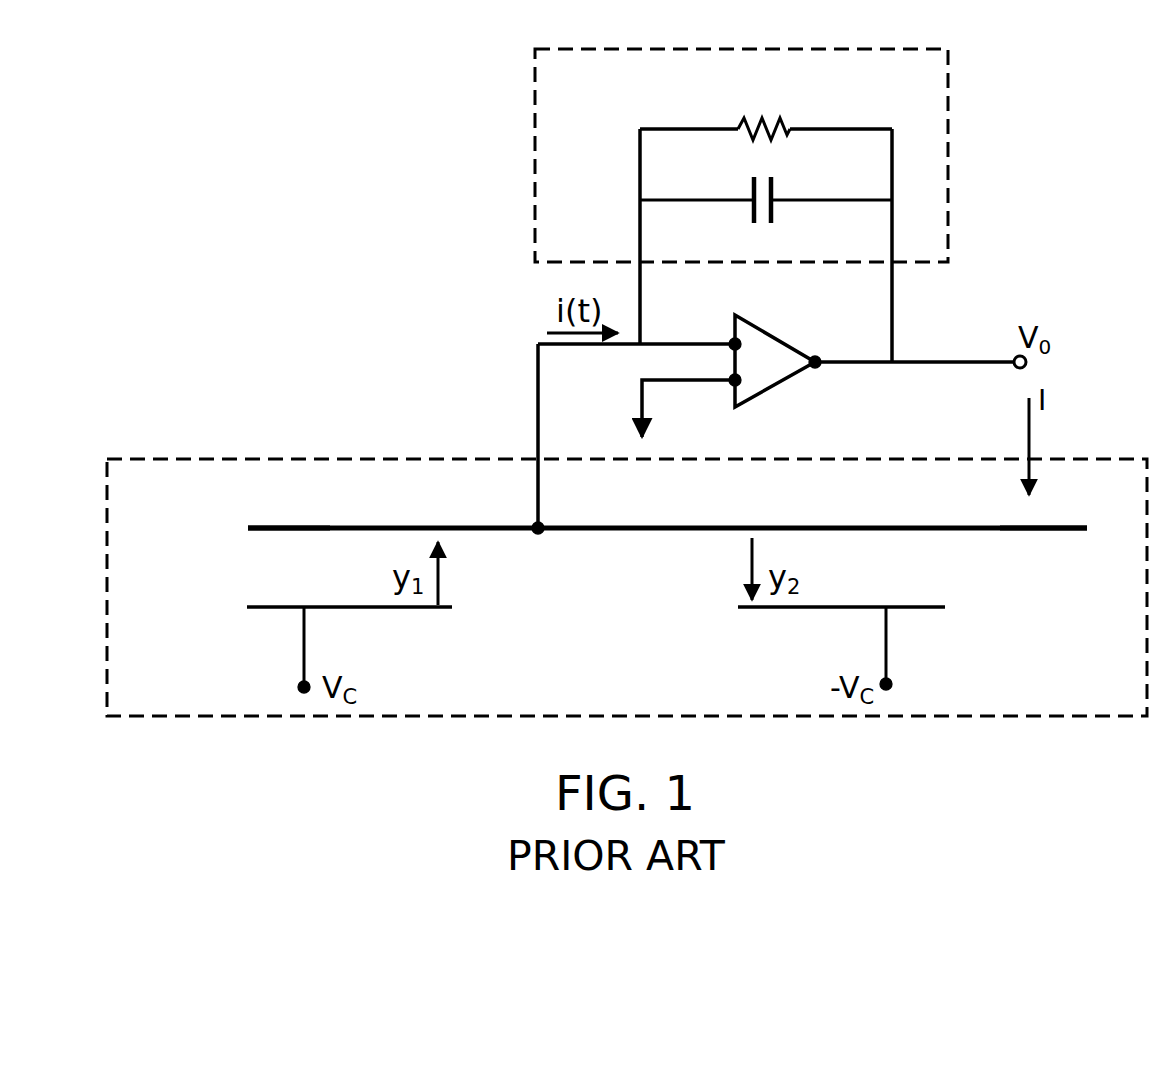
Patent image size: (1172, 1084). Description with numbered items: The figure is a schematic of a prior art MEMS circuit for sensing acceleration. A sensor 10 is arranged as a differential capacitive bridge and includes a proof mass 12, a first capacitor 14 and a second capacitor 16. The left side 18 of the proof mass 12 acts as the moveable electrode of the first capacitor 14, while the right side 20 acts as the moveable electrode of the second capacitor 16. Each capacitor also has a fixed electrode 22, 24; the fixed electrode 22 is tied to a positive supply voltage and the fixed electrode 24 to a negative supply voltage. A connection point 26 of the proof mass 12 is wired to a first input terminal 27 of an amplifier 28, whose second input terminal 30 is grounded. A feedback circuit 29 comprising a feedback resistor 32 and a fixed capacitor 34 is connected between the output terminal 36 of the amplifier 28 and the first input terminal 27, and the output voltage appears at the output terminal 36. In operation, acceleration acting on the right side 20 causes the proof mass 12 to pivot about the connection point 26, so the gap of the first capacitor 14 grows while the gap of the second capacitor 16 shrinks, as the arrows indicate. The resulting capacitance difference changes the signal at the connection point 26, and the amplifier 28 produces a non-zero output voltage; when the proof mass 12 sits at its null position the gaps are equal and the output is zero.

The sensor 10 is at (1124, 703).
The proof mass 12 is at (402, 514).
The first capacitor 14 is at (226, 585).
The second capacitor 16 is at (938, 580).
The left side of the proof mass 18 is at (305, 526).
The right side of the proof mass 20 is at (1010, 530).
The fixed electrode 22 is at (270, 612).
The fixed electrode 24 is at (920, 609).
The connection point 26 is at (541, 528).
The first input terminal 27 is at (733, 343).
The amplifier 28 is at (785, 393).
The feedback circuit 29 is at (580, 90).
The second input terminal 30 is at (733, 385).
The feedback resistor 32 is at (745, 120).
The fixed capacitor 34 is at (773, 182).
The output terminal 36 is at (817, 360).